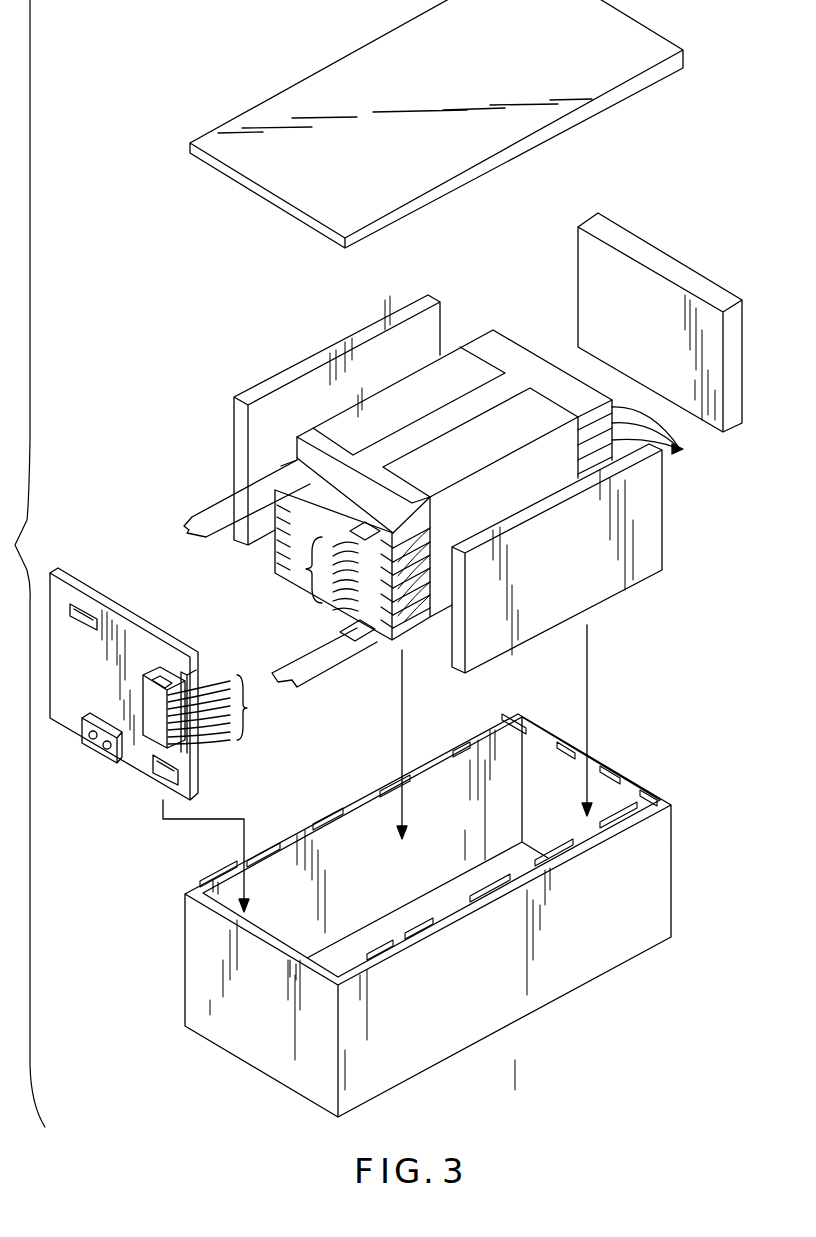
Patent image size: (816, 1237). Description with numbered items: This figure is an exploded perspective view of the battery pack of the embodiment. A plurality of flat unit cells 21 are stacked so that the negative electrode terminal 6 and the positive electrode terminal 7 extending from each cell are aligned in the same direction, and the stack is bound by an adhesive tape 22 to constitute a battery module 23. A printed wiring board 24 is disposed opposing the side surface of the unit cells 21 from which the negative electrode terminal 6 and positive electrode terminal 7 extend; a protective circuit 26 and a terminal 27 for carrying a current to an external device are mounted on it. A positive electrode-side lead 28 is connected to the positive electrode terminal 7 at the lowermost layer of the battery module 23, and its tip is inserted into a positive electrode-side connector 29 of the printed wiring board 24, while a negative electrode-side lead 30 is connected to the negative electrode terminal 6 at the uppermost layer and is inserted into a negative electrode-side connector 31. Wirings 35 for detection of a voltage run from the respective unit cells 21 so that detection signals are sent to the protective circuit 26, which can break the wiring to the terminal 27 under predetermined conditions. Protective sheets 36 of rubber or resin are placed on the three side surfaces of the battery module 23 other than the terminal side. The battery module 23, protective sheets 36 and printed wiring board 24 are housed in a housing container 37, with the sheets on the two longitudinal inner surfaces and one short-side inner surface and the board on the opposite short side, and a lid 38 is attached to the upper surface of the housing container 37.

The negative electrode terminal 6 is at (286, 468).
The positive electrode terminal 7 is at (366, 524).
The unit cells 21 is at (663, 435).
The adhesive tape 22 is at (520, 418).
The battery module 23 is at (383, 393).
The printed wiring board 24 is at (84, 579).
The protective circuit 26 is at (158, 668).
The terminal for carrying a current to an external device 27 is at (107, 753).
The positive electrode-side lead 28 is at (318, 679).
The positive electrode-side connector 29 is at (180, 777).
The negative electrode-side lead 30 is at (190, 517).
The negative electrode-side connector 31 is at (93, 615).
The wirings for detection of a voltage 35 is at (305, 569).
The protective sheets 36 is at (303, 372).
The housing container 37 is at (660, 878).
The lid 38 is at (625, 35).